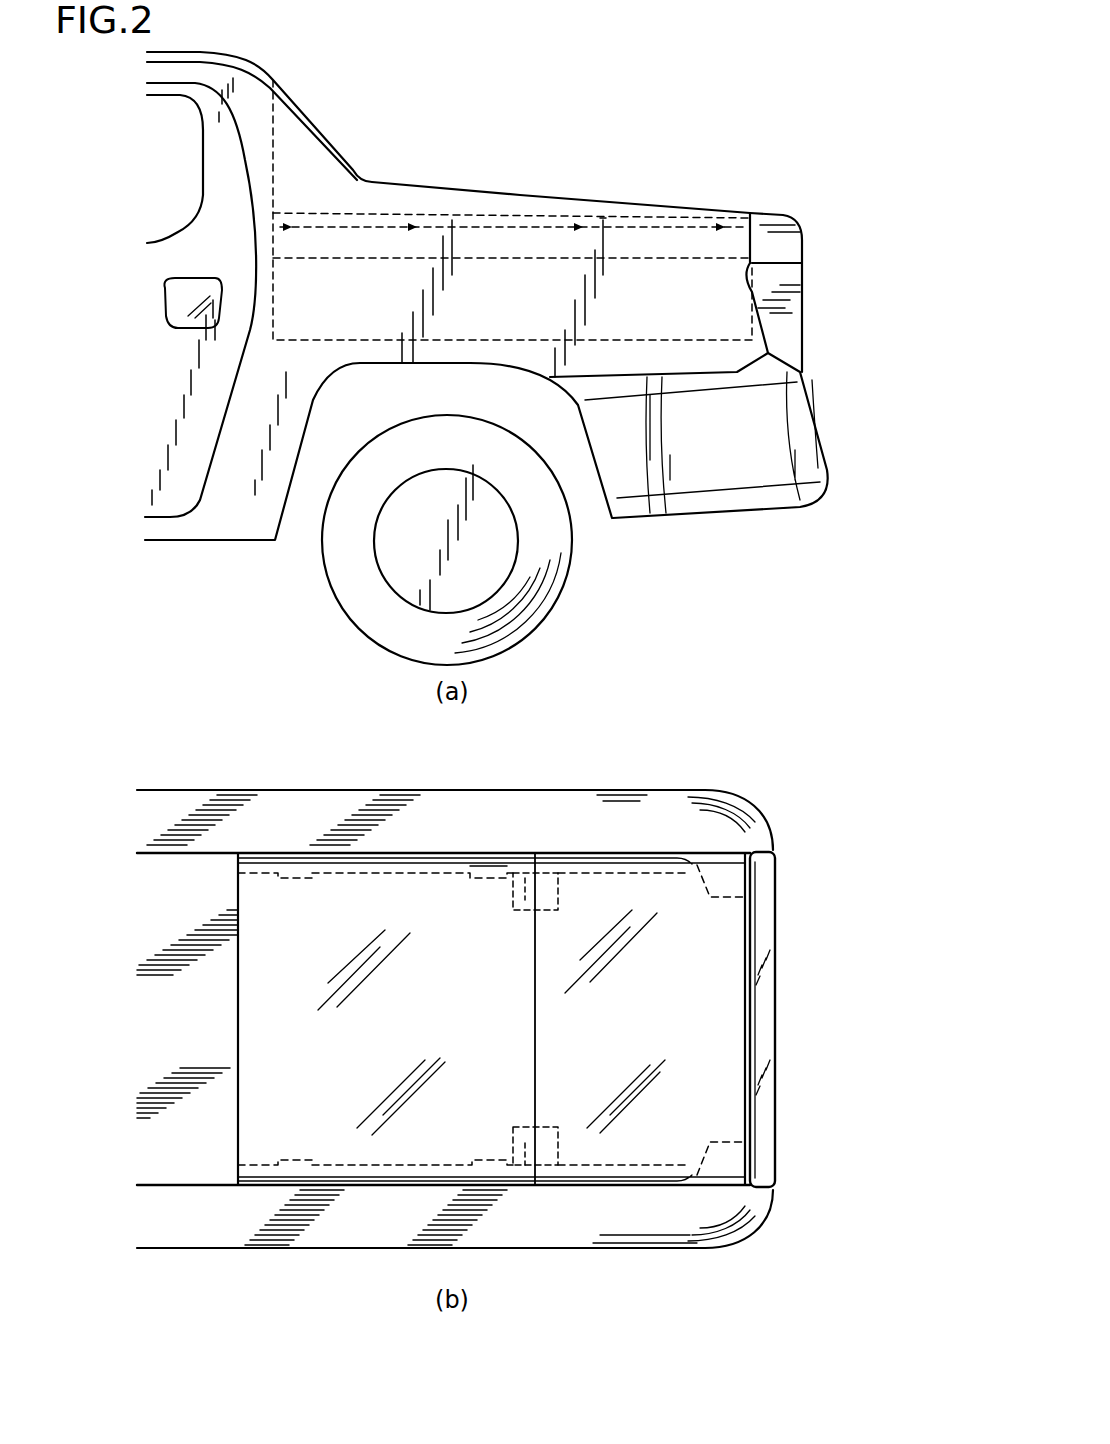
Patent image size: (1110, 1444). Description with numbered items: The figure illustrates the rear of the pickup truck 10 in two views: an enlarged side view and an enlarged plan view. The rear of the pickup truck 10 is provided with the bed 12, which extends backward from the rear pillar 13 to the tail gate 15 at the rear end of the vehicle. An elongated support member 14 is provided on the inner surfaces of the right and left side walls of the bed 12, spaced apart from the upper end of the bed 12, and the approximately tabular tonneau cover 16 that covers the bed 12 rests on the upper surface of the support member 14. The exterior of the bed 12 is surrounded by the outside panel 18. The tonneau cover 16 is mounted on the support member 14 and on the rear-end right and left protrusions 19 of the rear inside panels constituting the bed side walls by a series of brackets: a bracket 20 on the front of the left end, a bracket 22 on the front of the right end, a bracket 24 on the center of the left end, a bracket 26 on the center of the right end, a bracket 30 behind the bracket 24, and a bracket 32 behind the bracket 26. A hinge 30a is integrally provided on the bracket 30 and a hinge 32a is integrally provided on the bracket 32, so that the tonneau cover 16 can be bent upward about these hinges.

The pickup truck 10 is at (550, 114).
The bed 12 is at (383, 297).
The rear pillar 13 is at (290, 135).
The support member 14 is at (733, 247).
The tail gate 15 is at (777, 247).
The tonneau cover 16 is at (642, 222).
The outside panel 18 is at (625, 295).
The rear-end-right-and-left protrusions of rear inside panels 19 is at (720, 885).
The bracket 20 is at (277, 1168).
The bracket 22 is at (268, 853).
The bracket 24 is at (515, 1185).
The bracket 26 is at (507, 863).
The bracket 30 is at (568, 1185).
The hinge 30a is at (532, 1182).
The bracket 32 is at (567, 863).
The hinge 32a is at (525, 890).